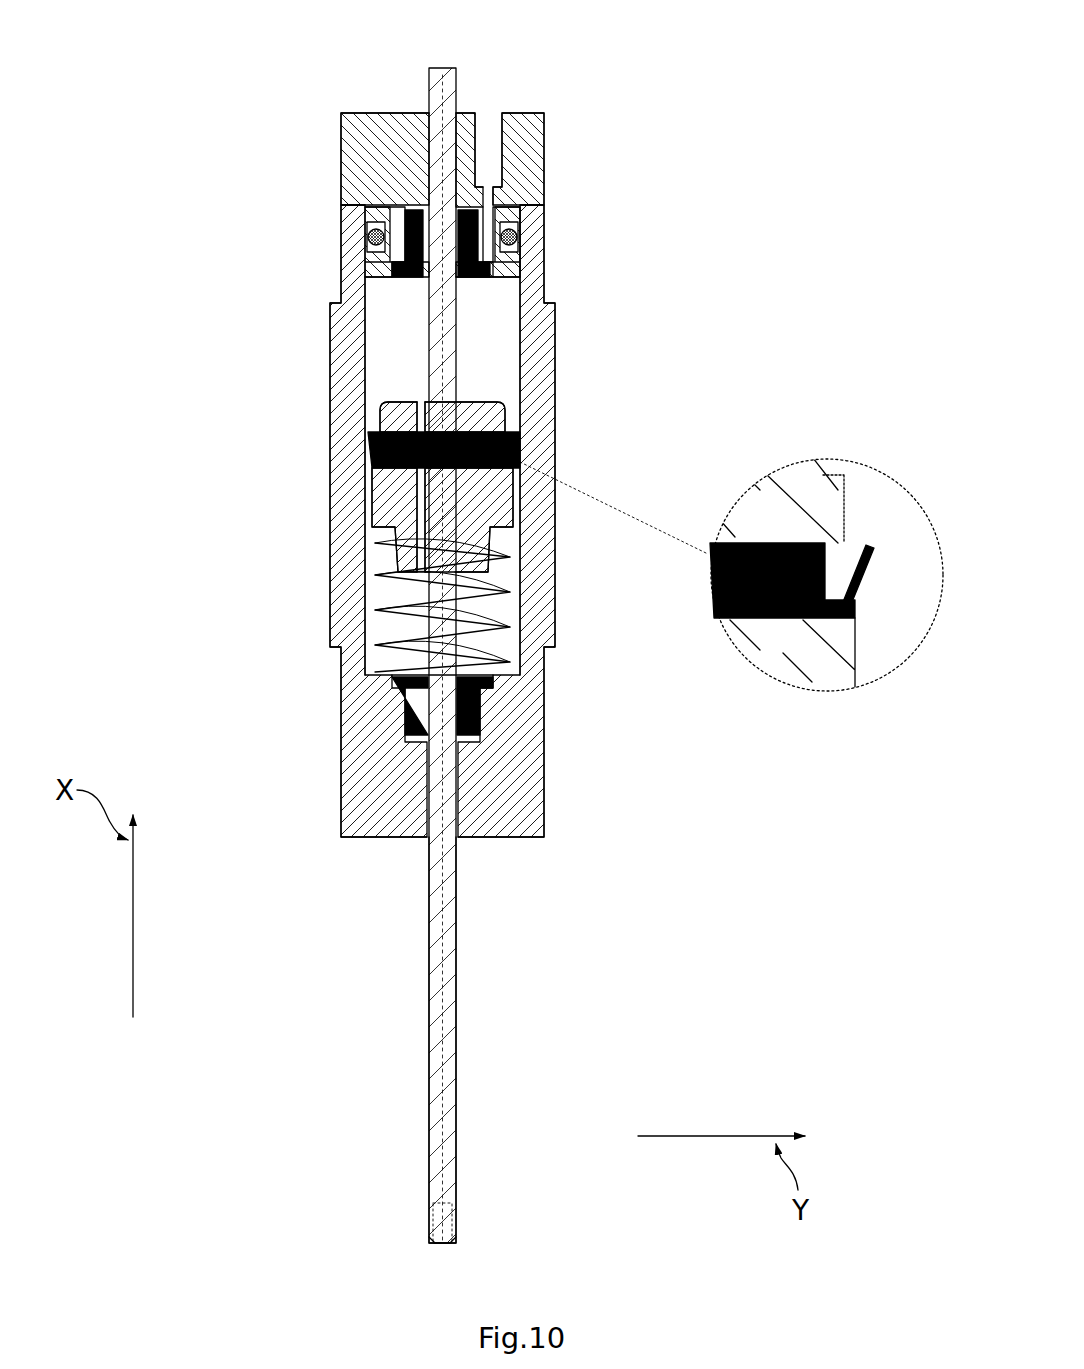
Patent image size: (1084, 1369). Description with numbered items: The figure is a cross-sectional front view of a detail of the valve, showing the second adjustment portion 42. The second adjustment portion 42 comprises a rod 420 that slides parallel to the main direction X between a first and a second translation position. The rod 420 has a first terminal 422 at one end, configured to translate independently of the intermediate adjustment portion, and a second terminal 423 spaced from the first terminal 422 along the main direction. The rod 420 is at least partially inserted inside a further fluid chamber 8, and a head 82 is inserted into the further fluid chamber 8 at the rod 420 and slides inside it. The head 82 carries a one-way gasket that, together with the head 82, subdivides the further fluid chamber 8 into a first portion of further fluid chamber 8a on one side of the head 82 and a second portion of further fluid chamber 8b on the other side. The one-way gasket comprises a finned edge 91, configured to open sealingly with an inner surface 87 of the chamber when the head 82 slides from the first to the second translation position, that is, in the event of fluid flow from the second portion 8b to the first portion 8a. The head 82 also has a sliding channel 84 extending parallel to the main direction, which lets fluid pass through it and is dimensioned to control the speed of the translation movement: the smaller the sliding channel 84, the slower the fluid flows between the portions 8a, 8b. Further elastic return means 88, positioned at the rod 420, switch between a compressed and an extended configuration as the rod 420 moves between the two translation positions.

The second adjustment portion 42 is at (240, 292).
The further fluid chamber 8 is at (383, 390).
The first portion of further fluid chamber 8a is at (405, 283).
The second portion of further fluid chamber 8b is at (380, 666).
The head 82 is at (485, 476).
The sliding channel 84 is at (420, 492).
The inner surface 87 is at (374, 322).
The further elastic return means 88 is at (378, 608).
The finned edge 91 is at (853, 550).
The rod 420 is at (394, 915).
The first terminal 422 is at (431, 82).
The second terminal 423 is at (429, 1146).